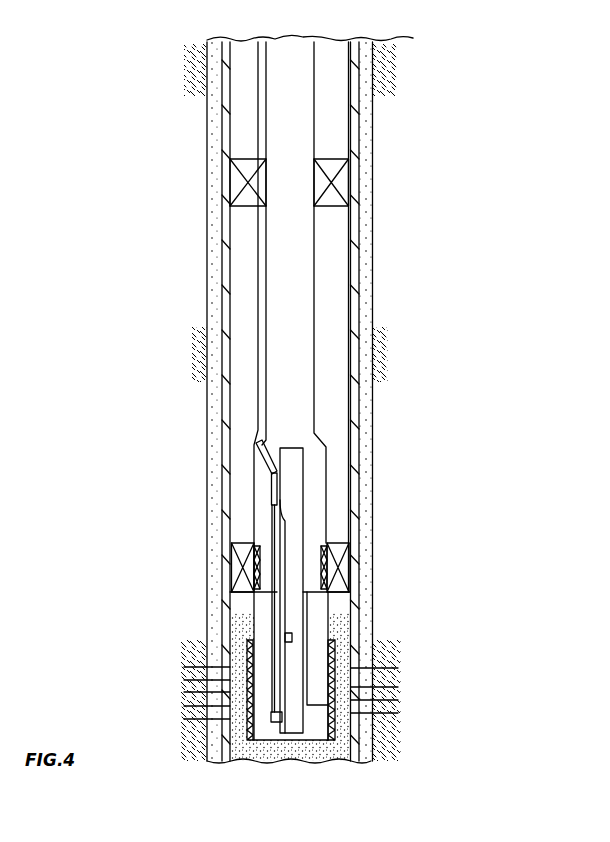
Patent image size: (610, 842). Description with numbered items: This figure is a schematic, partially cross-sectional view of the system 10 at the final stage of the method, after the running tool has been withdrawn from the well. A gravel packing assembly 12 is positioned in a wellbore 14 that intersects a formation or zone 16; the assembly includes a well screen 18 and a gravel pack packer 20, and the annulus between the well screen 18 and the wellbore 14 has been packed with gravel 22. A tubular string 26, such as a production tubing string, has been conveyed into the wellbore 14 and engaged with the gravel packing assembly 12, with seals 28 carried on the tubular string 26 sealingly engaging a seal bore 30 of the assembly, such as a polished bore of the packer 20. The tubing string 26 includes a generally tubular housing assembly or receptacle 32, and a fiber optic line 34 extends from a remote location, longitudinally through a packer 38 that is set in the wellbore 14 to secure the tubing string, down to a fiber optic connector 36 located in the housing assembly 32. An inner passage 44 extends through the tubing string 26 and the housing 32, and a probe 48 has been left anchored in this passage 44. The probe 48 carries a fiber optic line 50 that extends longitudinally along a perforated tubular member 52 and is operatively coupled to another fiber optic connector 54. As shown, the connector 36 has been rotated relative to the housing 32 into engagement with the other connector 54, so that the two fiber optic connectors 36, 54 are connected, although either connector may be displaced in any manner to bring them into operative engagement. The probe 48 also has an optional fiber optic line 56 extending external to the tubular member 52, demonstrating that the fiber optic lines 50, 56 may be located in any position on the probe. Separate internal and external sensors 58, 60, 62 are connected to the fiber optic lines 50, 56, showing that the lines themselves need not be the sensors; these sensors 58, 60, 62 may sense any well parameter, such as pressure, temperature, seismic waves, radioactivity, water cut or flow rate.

The system 10 is at (500, 124).
The gravel packing assembly 12 is at (343, 632).
The wellbore 14 is at (356, 87).
The formation or zone 16 is at (303, 704).
The well screen 18 is at (272, 718).
The gravel pack packer 20 is at (231, 563).
The gravel 22 is at (343, 752).
The tubular string 26 is at (318, 284).
The seals 28 is at (352, 567).
The seal bore 30 is at (257, 596).
The housing assembly 32 is at (326, 466).
The fiber optic line 34 is at (259, 277).
The fiber optic connector 36 is at (263, 462).
The packer 38 is at (349, 178).
The inner passage 44 is at (305, 392).
The probe 48 is at (307, 603).
The fiber optic line 50 is at (287, 517).
The perforated tubular member 52 is at (400, 698).
The fiber optic connector 54 is at (272, 492).
The fiber optic line 56 is at (185, 681).
The sensor 58 is at (265, 728).
The sensor 60 is at (283, 730).
The sensor 62 is at (292, 637).